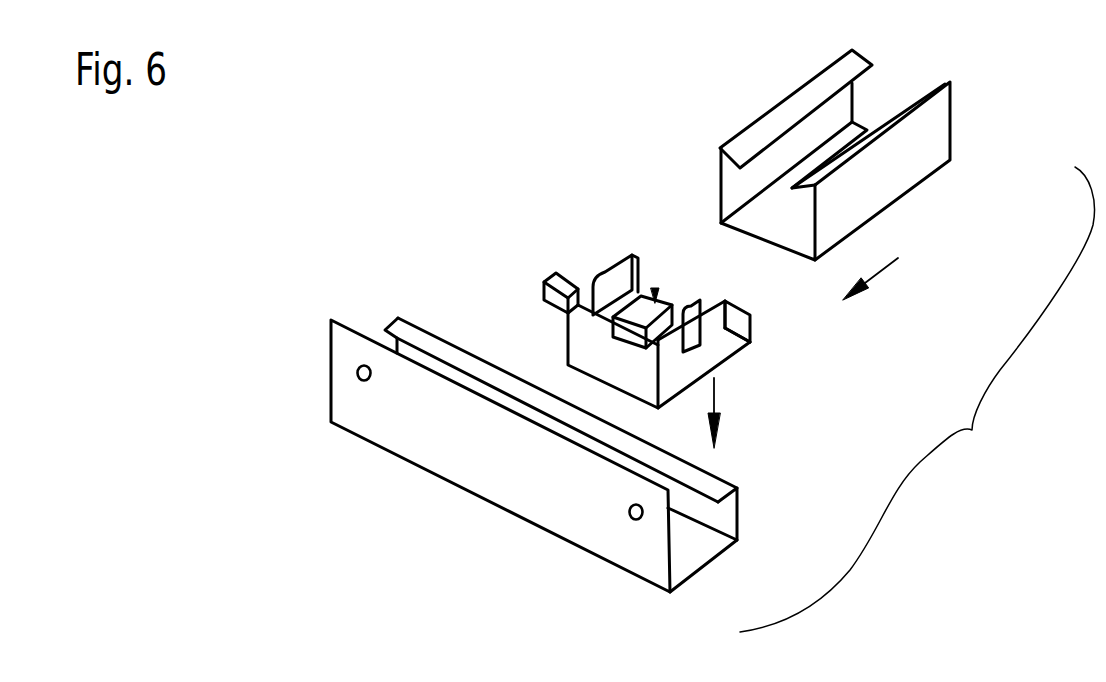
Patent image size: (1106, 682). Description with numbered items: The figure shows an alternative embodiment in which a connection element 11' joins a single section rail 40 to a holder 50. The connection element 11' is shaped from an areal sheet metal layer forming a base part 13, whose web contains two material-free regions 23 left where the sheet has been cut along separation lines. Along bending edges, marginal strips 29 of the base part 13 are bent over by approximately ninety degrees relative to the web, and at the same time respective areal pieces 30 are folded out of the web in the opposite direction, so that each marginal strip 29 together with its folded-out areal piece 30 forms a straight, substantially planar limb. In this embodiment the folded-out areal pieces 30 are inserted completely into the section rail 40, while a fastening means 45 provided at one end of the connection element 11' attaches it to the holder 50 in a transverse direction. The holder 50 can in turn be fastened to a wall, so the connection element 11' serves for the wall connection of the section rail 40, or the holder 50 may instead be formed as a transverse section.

The connection element 11' is at (666, 328).
The base part 13 is at (690, 273).
The material-free region 23 is at (655, 300).
The marginal strip 29 is at (753, 335).
The folded-out areal piece 30 is at (617, 290).
The section rail 40 is at (898, 172).
The fastening means 45 is at (560, 298).
The holder 50 is at (562, 514).